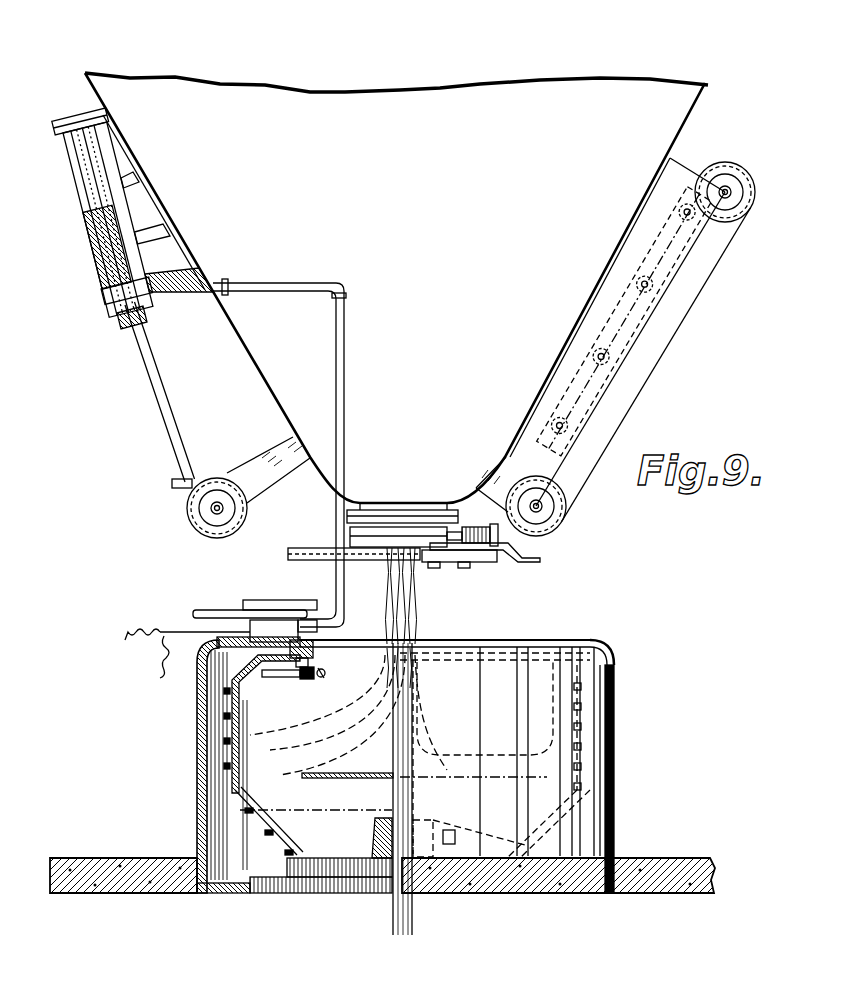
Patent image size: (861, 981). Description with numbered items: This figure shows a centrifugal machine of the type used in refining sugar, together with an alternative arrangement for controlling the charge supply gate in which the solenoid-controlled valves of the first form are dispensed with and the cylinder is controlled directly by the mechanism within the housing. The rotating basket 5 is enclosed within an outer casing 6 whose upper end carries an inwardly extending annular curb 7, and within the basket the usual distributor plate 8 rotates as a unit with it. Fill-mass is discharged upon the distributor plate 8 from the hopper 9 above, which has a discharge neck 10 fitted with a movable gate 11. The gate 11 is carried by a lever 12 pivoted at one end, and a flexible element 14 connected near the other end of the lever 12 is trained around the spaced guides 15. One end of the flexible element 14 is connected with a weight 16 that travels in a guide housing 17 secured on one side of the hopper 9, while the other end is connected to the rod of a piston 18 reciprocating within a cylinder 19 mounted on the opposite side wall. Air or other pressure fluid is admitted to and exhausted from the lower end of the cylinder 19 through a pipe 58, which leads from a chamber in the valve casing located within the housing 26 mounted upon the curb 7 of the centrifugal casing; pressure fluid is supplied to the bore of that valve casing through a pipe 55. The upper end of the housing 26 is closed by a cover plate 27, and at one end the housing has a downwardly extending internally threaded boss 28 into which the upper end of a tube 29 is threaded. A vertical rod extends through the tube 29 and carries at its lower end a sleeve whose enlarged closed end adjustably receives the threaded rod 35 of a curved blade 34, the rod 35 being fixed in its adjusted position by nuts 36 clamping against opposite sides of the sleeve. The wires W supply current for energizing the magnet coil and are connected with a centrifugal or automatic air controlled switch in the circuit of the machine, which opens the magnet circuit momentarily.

The hopper 9 is at (550, 120).
The spaced guides 15 is at (727, 190).
The weight 16 is at (645, 250).
The guide housing 17 is at (598, 335).
The piston 18 is at (80, 138).
The cylinder 19 is at (98, 237).
The pipe 58 is at (306, 286).
The flexible element 14 is at (285, 538).
The gate 11 is at (398, 533).
The discharge neck 10 is at (423, 563).
The lever 12 is at (512, 562).
The pipe 55 is at (210, 613).
The cover plate 27 is at (265, 603).
The housing 26 is at (278, 626).
The boss 28 is at (308, 658).
The tube 29 is at (300, 672).
The curved blade 34 is at (278, 680).
The threaded rod 35 is at (316, 675).
The nuts 36 is at (316, 684).
The distributor plate 8 is at (332, 773).
The curb 7 is at (240, 648).
The outer casing 6 is at (197, 790).
The rotating basket 5 is at (273, 818).
The wires W is at (157, 625).